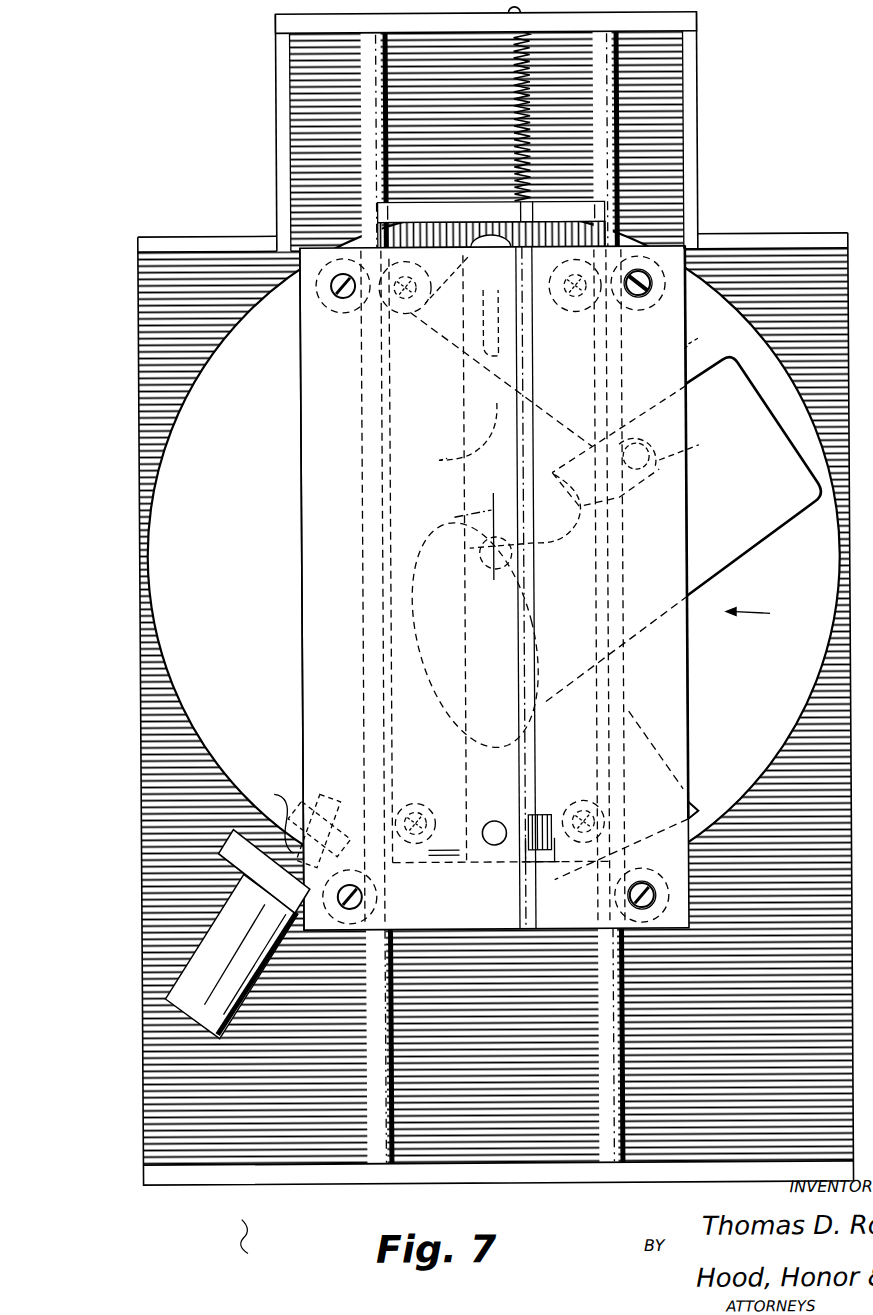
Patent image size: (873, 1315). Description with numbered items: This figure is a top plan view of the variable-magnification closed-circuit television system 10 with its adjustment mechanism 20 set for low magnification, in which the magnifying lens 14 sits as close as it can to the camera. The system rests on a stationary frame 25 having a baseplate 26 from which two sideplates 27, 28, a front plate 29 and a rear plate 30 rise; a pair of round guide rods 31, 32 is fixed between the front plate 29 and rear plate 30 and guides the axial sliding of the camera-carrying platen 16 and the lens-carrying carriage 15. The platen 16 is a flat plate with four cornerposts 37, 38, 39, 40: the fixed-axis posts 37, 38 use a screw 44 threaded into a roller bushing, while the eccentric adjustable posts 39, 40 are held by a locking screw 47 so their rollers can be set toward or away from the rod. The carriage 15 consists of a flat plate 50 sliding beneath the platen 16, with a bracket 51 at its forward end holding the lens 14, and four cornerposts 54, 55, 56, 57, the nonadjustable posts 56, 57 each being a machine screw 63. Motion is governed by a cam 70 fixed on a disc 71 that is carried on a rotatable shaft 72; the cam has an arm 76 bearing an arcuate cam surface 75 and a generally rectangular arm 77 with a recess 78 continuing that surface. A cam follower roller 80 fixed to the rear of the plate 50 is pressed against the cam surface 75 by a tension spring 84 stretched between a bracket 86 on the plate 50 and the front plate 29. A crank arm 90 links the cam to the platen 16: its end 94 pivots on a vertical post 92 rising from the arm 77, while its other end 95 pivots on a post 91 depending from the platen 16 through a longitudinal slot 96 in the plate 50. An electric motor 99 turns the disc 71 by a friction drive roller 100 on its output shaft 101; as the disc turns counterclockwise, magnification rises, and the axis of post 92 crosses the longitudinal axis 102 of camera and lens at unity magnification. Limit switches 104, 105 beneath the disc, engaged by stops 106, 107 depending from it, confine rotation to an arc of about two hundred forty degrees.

The variable-magnification closed-circuit television system 10 is at (235, 1245).
The magnifying lens 14 is at (478, 204).
The movable carriage 15 is at (612, 550).
The movable platen 16 is at (676, 675).
The adjustment mechanism 20 is at (764, 614).
The frame 25 is at (135, 372).
The baseplate 26 is at (495, 597).
The sideplate 27 is at (702, 104).
The sideplate 28 is at (278, 110).
The front plate 29 is at (702, 16).
The rear plate 30 is at (620, 1185).
The guide rod 31 is at (635, 596).
The guide rod 32 is at (372, 1050).
The cornerpost 37 is at (674, 886).
The cornerpost 38 is at (670, 265).
The cornerpost 39 is at (350, 912).
The cornerpost 40 is at (326, 304).
The screw 44 is at (662, 940).
The locking screw 47 is at (348, 300).
The flat plate 50 is at (612, 222).
The bracket 51 is at (545, 205).
The cornerpost 54 is at (580, 806).
The cornerpost 55 is at (576, 302).
The cornerpost 56 is at (415, 808).
The cornerpost 57 is at (410, 315).
The machine screw 63 is at (442, 814).
The cam 70 is at (757, 541).
The disc 71 is at (774, 738).
The shaft 72 is at (494, 575).
The arcuate cam surface 75 is at (452, 732).
The arm 76 is at (690, 762).
The arm 77 is at (742, 421).
The recess 78 is at (555, 556).
The cam follower roller 80 is at (493, 847).
The tension spring 84 is at (536, 92).
The bracket 86 is at (545, 865).
The crank arm 90 is at (501, 392).
The post 91 is at (462, 307).
The vertical post 92 is at (619, 446).
The end of crank 94 is at (692, 441).
The end of crank 95 is at (480, 268).
The longitudinal slot 96 is at (448, 461).
The electric motor 99 is at (233, 1010).
The friction drive roller 100 is at (319, 820).
The output shaft 101 is at (272, 812).
The longitudinal axis 102 is at (455, 536).
The limit switch 104 is at (448, 858).
The limit switch 105 is at (528, 815).
The stop 106 is at (711, 336).
The stop 107 is at (590, 872).